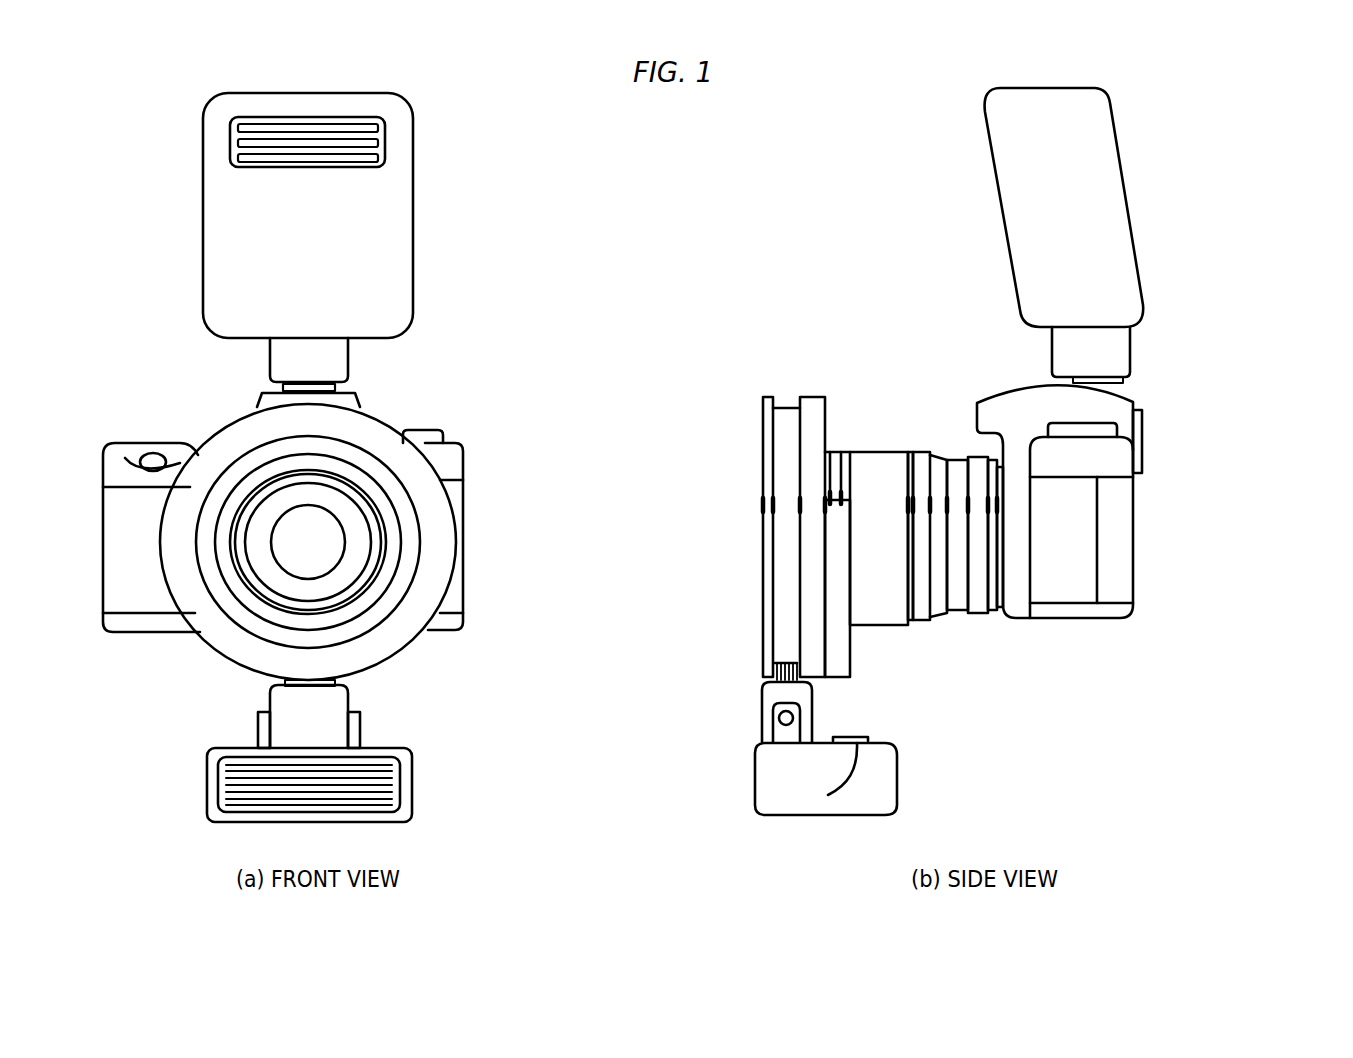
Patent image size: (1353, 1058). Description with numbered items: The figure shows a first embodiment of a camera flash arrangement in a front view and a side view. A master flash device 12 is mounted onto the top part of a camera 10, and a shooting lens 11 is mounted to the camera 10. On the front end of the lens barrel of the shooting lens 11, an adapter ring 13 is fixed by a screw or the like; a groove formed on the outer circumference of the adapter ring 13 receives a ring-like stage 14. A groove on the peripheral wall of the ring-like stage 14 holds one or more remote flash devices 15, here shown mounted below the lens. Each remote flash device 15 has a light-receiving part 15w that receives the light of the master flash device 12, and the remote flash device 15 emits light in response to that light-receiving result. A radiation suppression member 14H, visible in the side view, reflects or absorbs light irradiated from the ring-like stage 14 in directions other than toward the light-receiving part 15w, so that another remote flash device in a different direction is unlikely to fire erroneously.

The camera 10 is at (1180, 492).
The shooting lens 11 is at (362, 556).
The master flash device 12 is at (1200, 130).
The adapter ring 13 is at (830, 455).
The ring-like stage 14 is at (847, 343).
The radiation suppression member 14H is at (838, 627).
The remote flash device 15 is at (940, 808).
The light-receiving part 15w is at (828, 795).